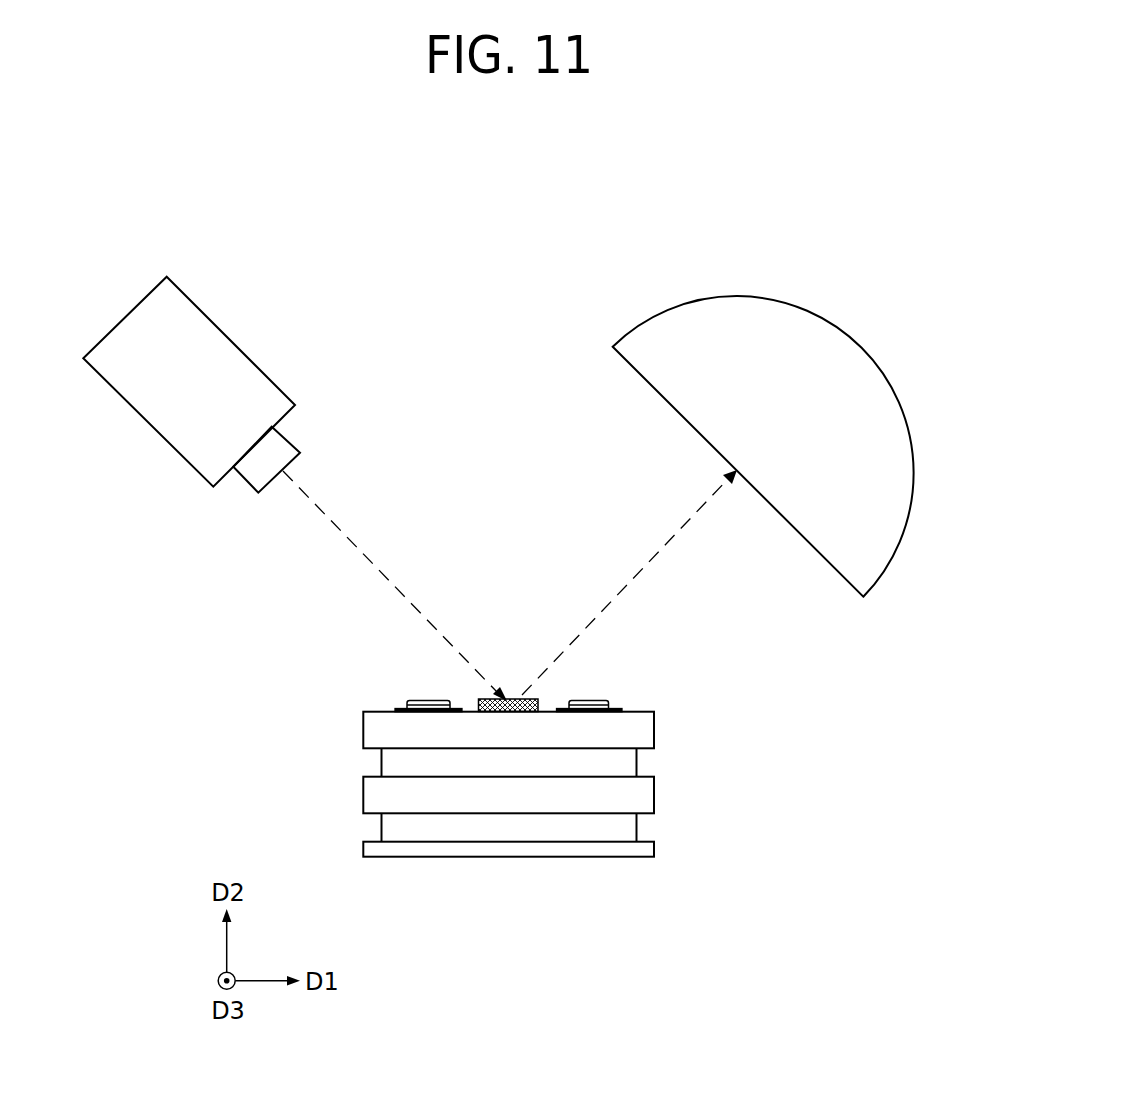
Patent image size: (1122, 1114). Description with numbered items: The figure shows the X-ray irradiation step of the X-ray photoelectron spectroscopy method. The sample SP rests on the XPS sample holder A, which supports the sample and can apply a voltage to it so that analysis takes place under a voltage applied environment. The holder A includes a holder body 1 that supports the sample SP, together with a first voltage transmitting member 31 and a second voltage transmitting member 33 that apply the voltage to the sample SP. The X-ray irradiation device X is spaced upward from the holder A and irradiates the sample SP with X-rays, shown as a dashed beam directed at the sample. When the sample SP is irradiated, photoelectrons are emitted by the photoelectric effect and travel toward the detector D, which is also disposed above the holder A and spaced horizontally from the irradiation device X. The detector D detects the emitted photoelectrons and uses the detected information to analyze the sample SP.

The X-ray irradiation device X is at (232, 340).
The detector D is at (780, 298).
The XPS sample holder A is at (534, 745).
The holder body 1 is at (363, 727).
The first voltage transmitting member 31 is at (428, 700).
The second voltage transmitting member 33 is at (597, 700).
The sample SP is at (530, 700).